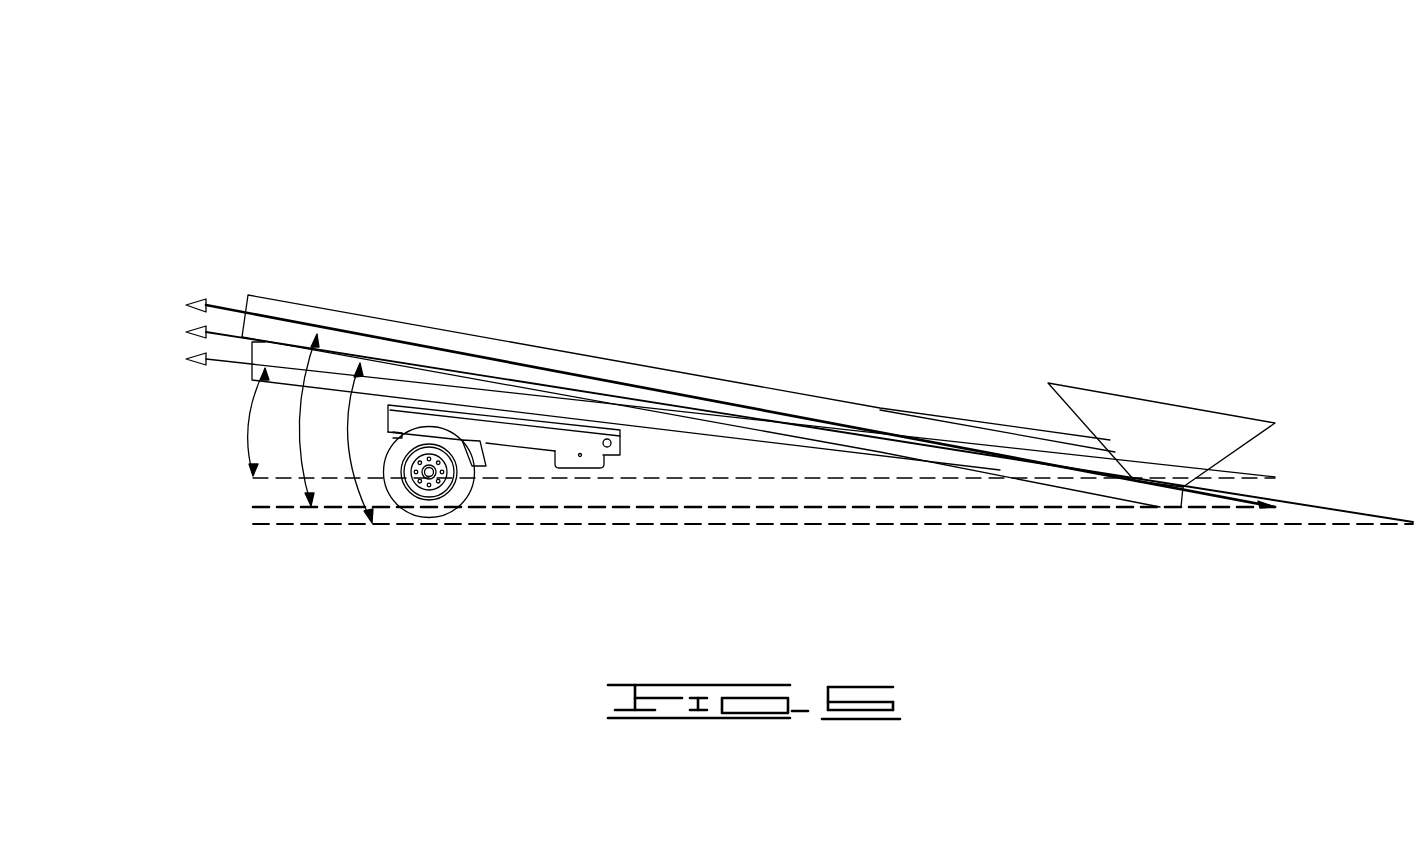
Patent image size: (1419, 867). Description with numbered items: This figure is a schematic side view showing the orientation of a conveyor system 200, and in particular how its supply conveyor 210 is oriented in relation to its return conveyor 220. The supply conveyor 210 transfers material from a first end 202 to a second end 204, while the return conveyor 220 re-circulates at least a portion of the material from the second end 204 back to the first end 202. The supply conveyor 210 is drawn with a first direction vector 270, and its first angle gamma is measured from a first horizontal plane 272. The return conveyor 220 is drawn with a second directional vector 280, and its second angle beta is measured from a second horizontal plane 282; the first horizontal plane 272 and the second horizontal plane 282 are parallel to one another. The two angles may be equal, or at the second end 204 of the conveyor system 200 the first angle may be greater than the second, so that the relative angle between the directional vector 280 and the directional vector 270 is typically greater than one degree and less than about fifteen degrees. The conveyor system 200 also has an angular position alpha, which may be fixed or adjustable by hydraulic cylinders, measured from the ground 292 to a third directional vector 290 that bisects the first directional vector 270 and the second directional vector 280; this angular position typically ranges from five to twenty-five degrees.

The conveyor system 200 is at (1025, 167).
The first end 202 is at (1302, 484).
The second end 204 is at (250, 272).
The supply conveyor 210 is at (347, 311).
The return conveyor 220 is at (250, 378).
The first direction vector 270 is at (190, 302).
The first horizontal plane 272 is at (255, 508).
The second directional vector 280 is at (190, 360).
The second horizontal plane 282 is at (278, 480).
The third directional vector 290 is at (190, 330).
The ground 292 is at (278, 523).